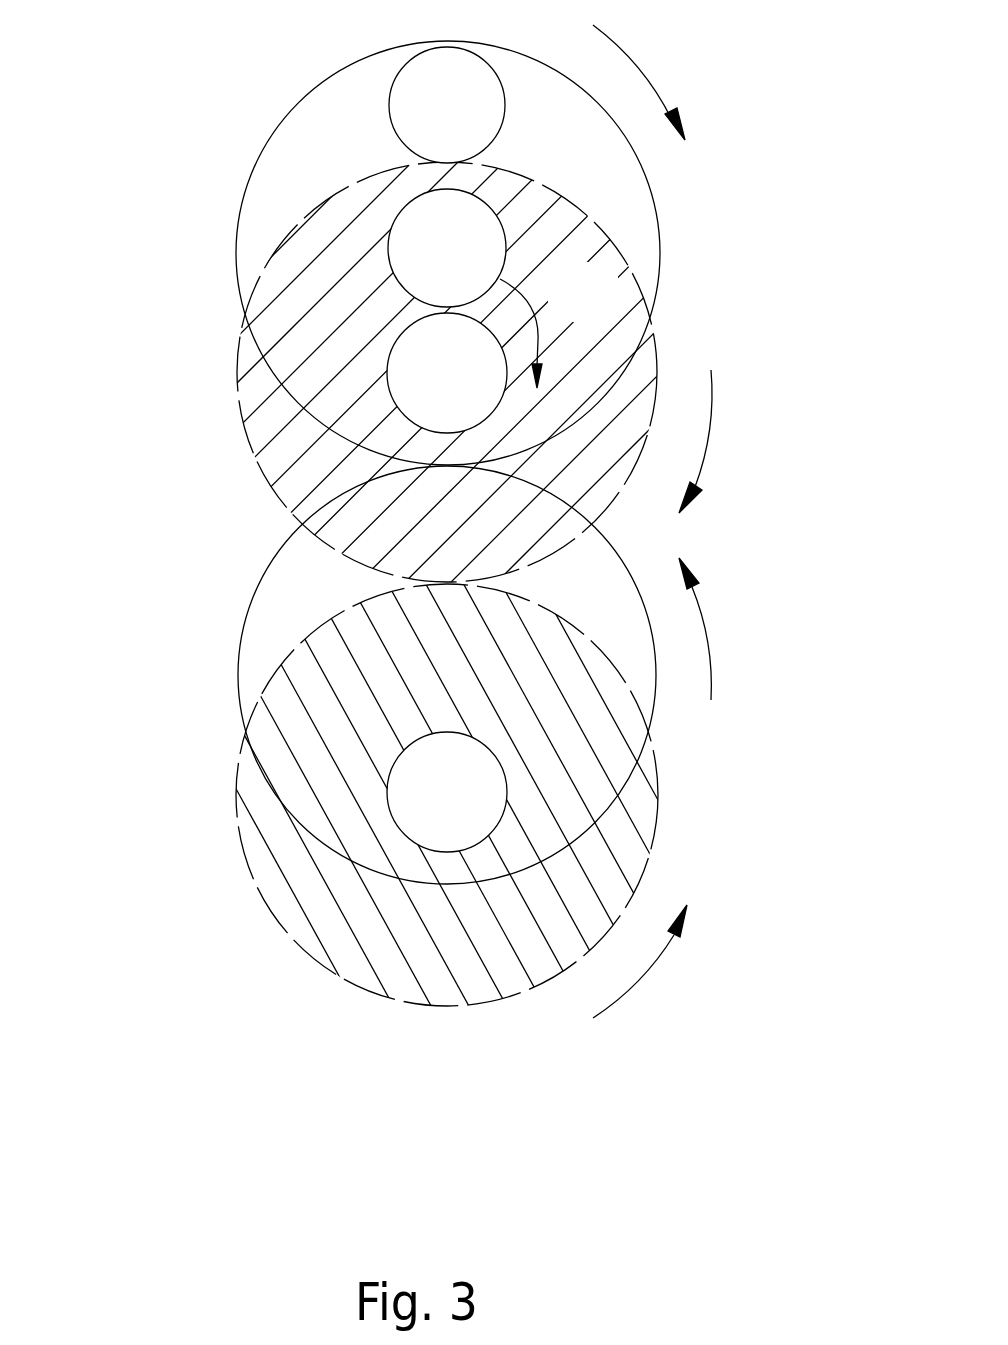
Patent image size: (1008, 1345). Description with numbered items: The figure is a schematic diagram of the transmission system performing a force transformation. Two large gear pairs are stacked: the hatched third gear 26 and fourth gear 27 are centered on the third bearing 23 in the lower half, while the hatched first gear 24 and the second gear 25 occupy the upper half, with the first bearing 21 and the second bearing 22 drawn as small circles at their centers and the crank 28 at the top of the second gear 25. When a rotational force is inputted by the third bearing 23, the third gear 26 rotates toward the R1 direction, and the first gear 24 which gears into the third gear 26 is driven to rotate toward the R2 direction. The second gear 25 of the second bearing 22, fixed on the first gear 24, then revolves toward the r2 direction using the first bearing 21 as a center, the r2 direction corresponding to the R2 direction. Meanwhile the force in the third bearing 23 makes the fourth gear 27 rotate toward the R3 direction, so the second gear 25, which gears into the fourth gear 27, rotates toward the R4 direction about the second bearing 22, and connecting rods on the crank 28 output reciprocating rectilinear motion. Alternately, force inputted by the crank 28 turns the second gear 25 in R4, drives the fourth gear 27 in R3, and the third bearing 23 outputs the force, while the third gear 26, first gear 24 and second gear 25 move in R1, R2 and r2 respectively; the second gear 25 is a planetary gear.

The first bearing 21 is at (447, 373).
The second bearing 22 is at (447, 248).
The third bearing 23 is at (447, 792).
The first gear 24 is at (238, 382).
The second gear 25 is at (241, 197).
The third gear 26 is at (238, 767).
The fourth gear 27 is at (248, 598).
The crank 28 is at (447, 105).
The r2 direction r2 is at (559, 318).
The R1 direction R1 is at (659, 976).
The R2 direction R2 is at (736, 441).
The R3 direction R3 is at (743, 629).
The R4 direction R4 is at (664, 70).